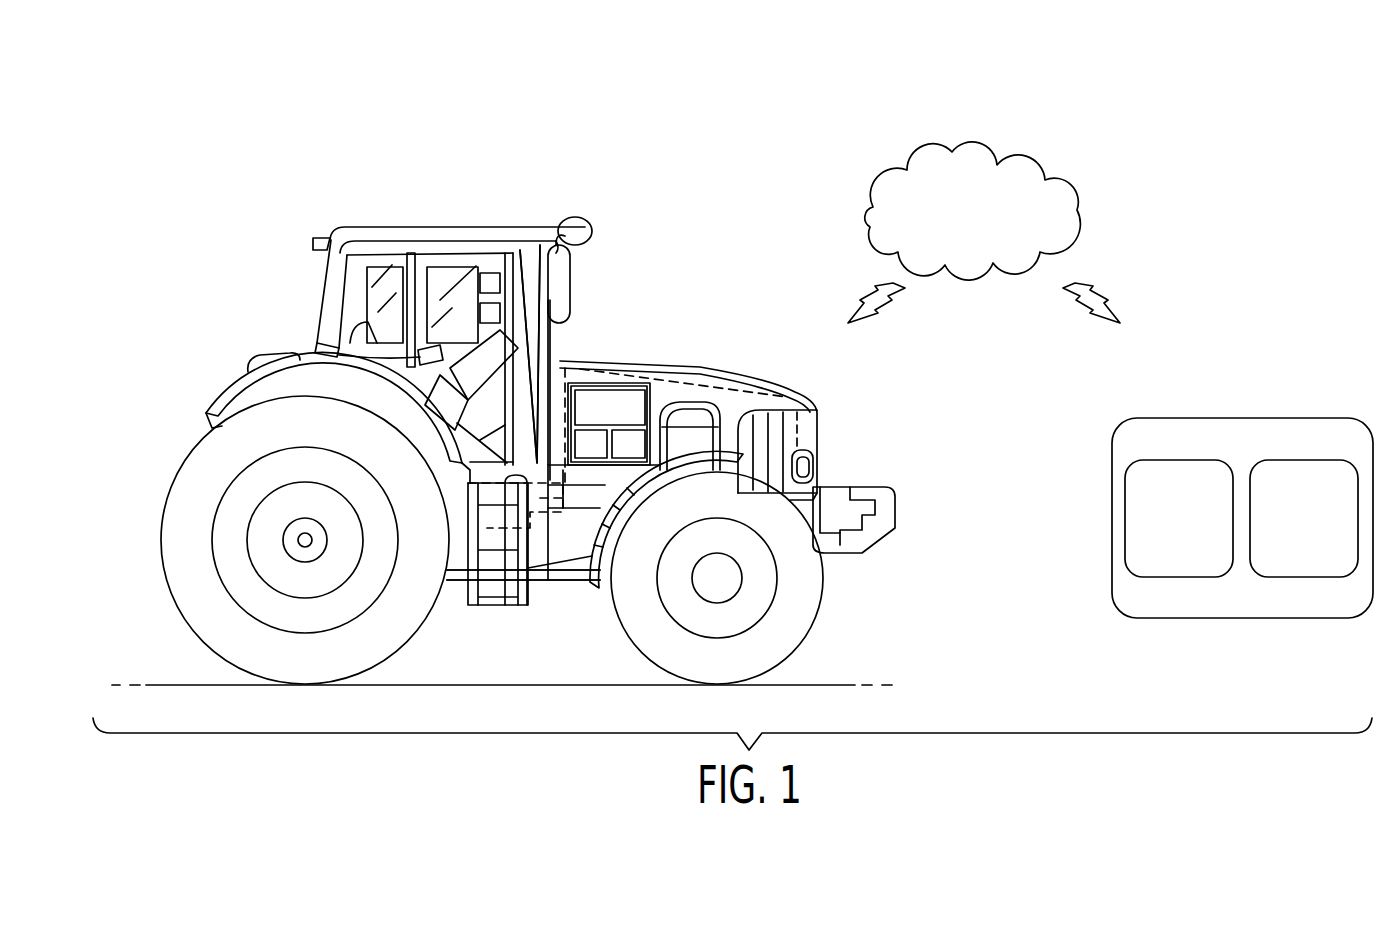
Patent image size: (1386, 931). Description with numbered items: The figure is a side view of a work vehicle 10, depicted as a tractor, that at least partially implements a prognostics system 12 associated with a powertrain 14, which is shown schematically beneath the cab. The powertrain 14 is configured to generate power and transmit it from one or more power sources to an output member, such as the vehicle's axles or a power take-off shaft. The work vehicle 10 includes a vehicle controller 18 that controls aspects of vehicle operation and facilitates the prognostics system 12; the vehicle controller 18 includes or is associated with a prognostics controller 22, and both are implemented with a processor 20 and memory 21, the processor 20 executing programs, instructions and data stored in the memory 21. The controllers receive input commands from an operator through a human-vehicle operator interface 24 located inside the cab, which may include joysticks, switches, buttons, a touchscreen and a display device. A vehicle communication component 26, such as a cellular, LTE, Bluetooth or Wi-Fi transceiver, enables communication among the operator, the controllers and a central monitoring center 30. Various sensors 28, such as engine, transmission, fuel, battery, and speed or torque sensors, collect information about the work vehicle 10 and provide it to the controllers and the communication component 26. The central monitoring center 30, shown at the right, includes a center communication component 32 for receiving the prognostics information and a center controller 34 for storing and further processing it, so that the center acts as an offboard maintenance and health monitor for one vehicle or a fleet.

The work vehicle 10 is at (278, 222).
The prognostics system 12 is at (363, 157).
The powertrain 14 is at (560, 544).
The vehicle controller 18 is at (608, 383).
The processor 20 is at (580, 458).
The memory 21 is at (617, 458).
The prognostics controller 22 is at (594, 420).
The human-vehicle operator interface 24 is at (486, 273).
The vehicle communication component 26 is at (530, 288).
The sensors 28 is at (540, 530).
The central monitoring center 30 is at (1228, 609).
The center communication component 32 is at (1166, 534).
The center controller 34 is at (1290, 534).